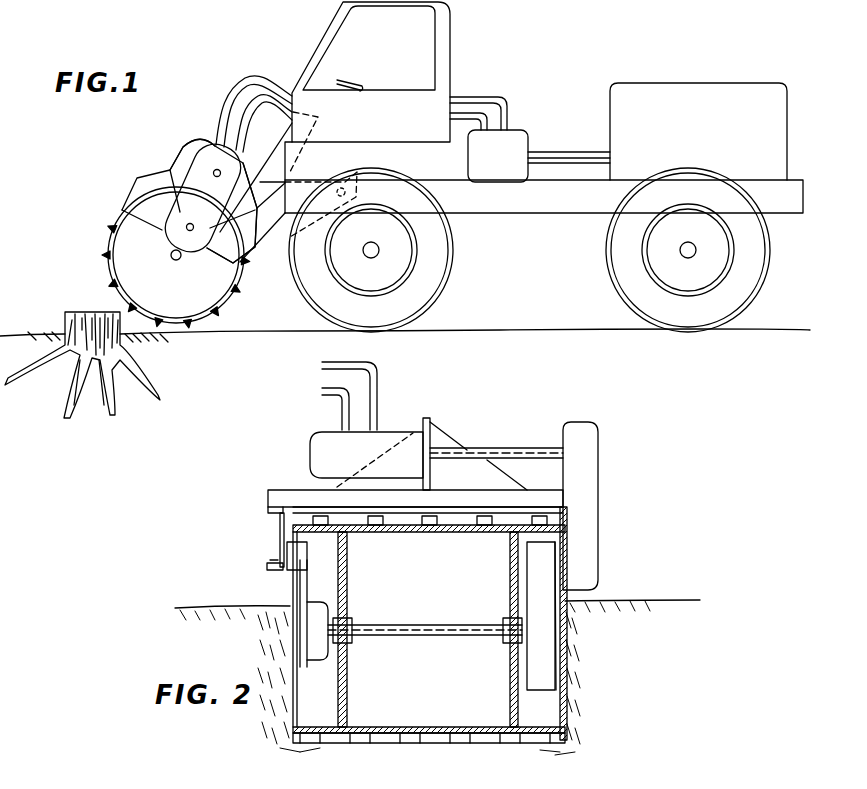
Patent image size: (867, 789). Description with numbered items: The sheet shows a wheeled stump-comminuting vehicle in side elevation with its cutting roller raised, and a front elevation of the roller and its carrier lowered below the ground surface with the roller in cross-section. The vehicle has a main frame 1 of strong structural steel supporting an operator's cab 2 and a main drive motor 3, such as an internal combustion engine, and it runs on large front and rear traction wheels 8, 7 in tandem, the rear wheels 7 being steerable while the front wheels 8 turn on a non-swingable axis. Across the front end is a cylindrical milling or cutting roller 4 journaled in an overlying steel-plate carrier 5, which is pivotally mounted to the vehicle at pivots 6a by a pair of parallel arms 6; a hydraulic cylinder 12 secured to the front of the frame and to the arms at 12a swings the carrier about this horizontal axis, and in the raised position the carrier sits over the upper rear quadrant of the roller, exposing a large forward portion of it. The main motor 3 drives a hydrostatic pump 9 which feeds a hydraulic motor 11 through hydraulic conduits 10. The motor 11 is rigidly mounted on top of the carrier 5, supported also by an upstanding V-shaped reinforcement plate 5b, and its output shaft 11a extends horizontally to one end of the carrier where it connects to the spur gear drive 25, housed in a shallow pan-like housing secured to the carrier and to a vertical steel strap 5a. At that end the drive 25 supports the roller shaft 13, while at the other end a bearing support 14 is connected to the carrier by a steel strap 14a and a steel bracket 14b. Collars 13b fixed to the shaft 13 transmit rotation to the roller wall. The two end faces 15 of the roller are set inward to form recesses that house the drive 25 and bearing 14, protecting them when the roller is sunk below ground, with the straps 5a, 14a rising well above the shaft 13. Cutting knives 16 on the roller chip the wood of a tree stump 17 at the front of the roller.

In FIG. 1, the main frame 1 is at (538, 195).
In FIG. 1, the operator's cab 2 is at (443, 15).
In FIG. 1, the main drive motor 3 is at (686, 96).
In FIG. 1, the cutting roller 4 is at (128, 251).
In FIG. 2, the cutting roller 4 is at (437, 695).
In FIG. 1, the carrier 5 is at (131, 181).
In FIG. 2, the carrier 5 is at (266, 496).
In FIG. 2, the vertical steel strap 5a is at (568, 517).
In FIG. 2, the V shape reinforcement plate 5b is at (455, 433).
In FIG. 1, the arms 6 is at (274, 254).
In FIG. 1, the pivots 6a is at (347, 188).
In FIG. 1, the rear traction wheels 7 is at (750, 265).
In FIG. 1, the front traction wheels 8 is at (440, 270).
In FIG. 1, the hydrostatic pump 9 is at (518, 148).
In FIG. 1, the hydraulic conduits 10 is at (232, 100).
In FIG. 2, the hydraulic conduits 10 is at (322, 391).
In FIG. 1, the hydraulic motor 11 is at (186, 153).
In FIG. 2, the hydraulic motor 11 is at (320, 459).
In FIG. 2, the output shaft 11a is at (512, 450).
In FIG. 1, the hydraulic cylinder 12 is at (278, 159).
In FIG. 1, the cylinder connection to arms 12a is at (250, 213).
In FIG. 1, the shaft 13 is at (172, 260).
In FIG. 2, the shaft 13 is at (433, 627).
In FIG. 2, the collars 13b is at (348, 623).
In FIG. 2, the bearing support 14 is at (318, 637).
In FIG. 2, the steel strap 14a is at (281, 539).
In FIG. 2, the steel bracket 14b is at (284, 572).
In FIG. 2, the end faces 15 is at (347, 693).
In FIG. 1, the cutting knives 16 is at (122, 300).
In FIG. 2, the cutting knives 16 is at (482, 530).
In FIG. 1, the tree stump 17 is at (80, 325).
In FIG. 1, the intermediate gear drives 25 is at (180, 256).
In FIG. 2, the intermediate gear drives 25 is at (585, 483).